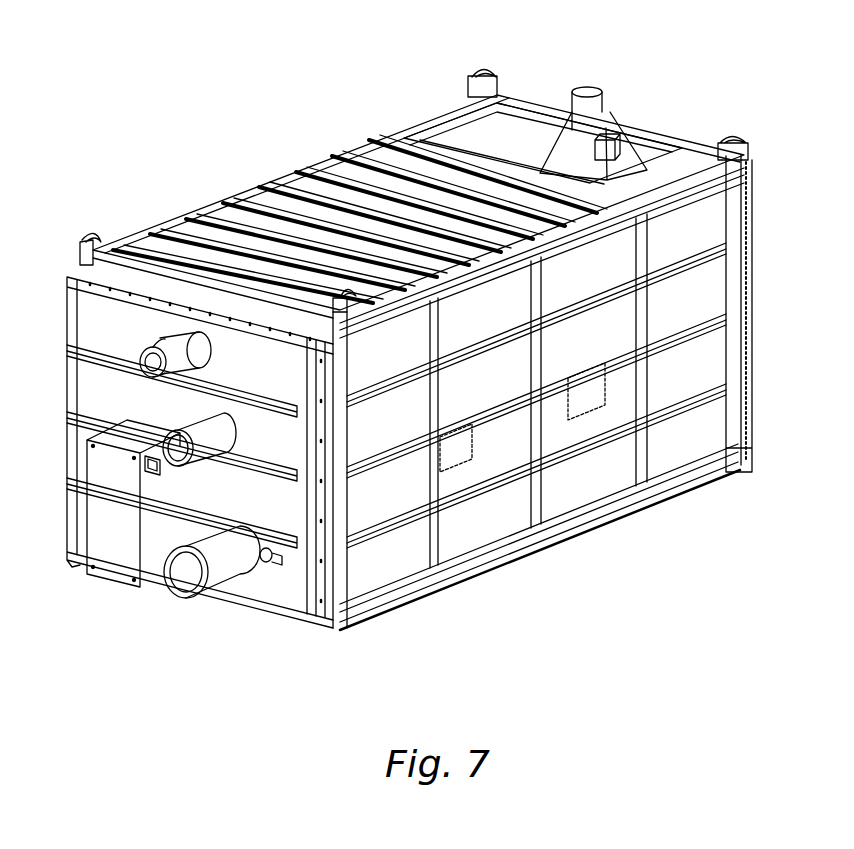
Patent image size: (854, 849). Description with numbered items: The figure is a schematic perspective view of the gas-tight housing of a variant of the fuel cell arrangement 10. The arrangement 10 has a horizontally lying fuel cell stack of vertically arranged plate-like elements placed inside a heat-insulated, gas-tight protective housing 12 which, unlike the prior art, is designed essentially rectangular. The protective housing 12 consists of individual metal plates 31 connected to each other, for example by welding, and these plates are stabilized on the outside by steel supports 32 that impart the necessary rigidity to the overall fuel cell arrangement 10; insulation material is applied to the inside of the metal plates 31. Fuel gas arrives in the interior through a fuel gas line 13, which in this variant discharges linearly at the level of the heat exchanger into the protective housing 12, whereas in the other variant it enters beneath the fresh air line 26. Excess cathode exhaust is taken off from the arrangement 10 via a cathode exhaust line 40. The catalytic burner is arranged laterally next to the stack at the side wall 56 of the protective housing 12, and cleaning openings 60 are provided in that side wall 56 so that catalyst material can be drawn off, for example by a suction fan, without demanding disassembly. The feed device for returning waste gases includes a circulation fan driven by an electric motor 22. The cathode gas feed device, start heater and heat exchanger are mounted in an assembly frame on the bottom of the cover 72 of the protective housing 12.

The fuel cell arrangement 10 is at (141, 71).
The protective housing 12 is at (384, 128).
The fuel gas line 13 is at (152, 350).
The electric motor 22 is at (593, 121).
The fresh air line 26 is at (248, 470).
The metal plates 31 is at (413, 557).
The steel supports 32 is at (240, 210).
The cathode exhaust line 40 is at (226, 573).
The side wall 56 is at (702, 423).
The cleaning openings 60 is at (460, 455).
The cover 72 is at (324, 200).